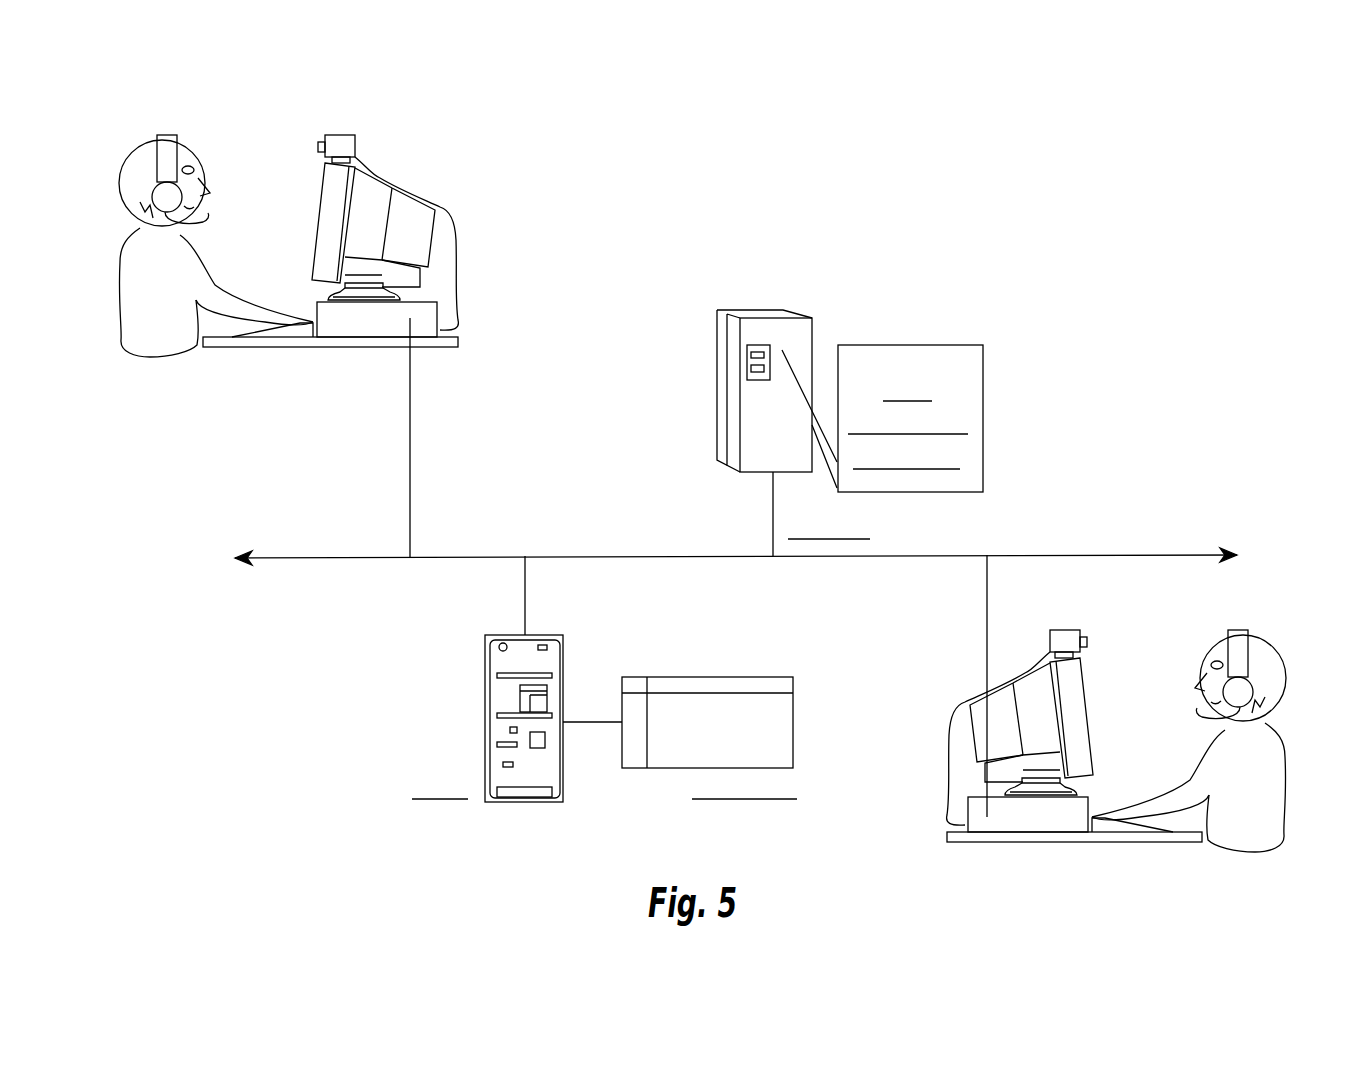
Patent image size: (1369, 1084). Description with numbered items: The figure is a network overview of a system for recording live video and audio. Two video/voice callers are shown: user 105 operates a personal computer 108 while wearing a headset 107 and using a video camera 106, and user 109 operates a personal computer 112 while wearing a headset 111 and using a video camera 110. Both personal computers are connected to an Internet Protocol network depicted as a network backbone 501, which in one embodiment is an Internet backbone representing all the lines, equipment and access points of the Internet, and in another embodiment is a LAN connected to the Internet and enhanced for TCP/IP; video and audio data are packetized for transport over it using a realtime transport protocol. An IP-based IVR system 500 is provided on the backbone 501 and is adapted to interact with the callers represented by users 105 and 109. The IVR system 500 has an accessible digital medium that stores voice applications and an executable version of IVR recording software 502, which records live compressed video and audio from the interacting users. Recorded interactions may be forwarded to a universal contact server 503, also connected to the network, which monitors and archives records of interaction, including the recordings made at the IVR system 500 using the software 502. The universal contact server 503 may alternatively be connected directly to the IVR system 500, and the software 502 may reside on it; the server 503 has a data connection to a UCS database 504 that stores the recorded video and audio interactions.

The user 105 is at (118, 270).
The video camera 106 is at (355, 150).
The headset 107 is at (150, 196).
The personal computer 108 is at (315, 215).
The user 109 is at (1285, 762).
The video camera 110 is at (1063, 630).
The headset 111 is at (1283, 685).
The personal computer 112 is at (1087, 708).
The IP-based IVR system 500 is at (812, 335).
The network backbone 501 is at (587, 555).
The IVR recording software 502 is at (983, 415).
The universal contact server 503 is at (485, 703).
The UCS database 504 is at (715, 677).